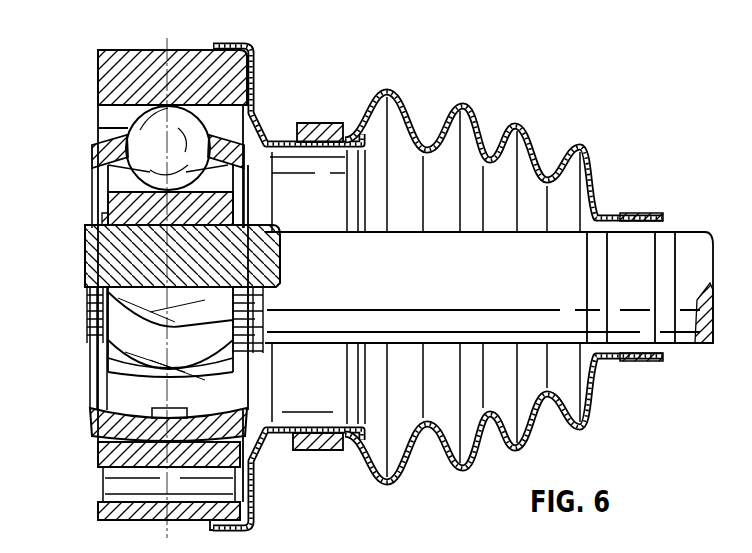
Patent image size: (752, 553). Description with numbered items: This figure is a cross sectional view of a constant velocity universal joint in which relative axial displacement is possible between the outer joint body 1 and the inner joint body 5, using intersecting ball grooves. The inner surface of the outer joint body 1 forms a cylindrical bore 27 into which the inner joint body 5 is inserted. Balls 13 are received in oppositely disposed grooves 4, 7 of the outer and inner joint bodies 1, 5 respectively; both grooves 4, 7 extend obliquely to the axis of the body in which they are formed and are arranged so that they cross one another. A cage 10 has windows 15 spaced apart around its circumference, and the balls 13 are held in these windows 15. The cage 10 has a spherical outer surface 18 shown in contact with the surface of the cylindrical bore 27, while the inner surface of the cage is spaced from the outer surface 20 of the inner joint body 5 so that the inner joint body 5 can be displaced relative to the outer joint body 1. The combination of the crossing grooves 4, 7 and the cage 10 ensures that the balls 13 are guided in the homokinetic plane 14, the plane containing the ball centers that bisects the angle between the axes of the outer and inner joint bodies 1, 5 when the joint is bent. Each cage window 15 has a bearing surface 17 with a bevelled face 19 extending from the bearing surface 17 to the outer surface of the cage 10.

The outer joint body 1 is at (118, 512).
The groove of the outer joint body 4 is at (103, 115).
The inner joint body 5 is at (112, 372).
The groove of the inner joint body 7 is at (120, 183).
The cage 10 is at (108, 152).
The balls 13 is at (230, 70).
The homokinetic plane 14 is at (233, 497).
The cage window 15 is at (208, 130).
The bearing surface 17 is at (157, 150).
The spherical outer surface of the cage 18 is at (103, 433).
The bevelled face 19 is at (130, 147).
The outer surface of the inner joint body 20 is at (112, 395).
The cylindrical bore 27 is at (250, 440).